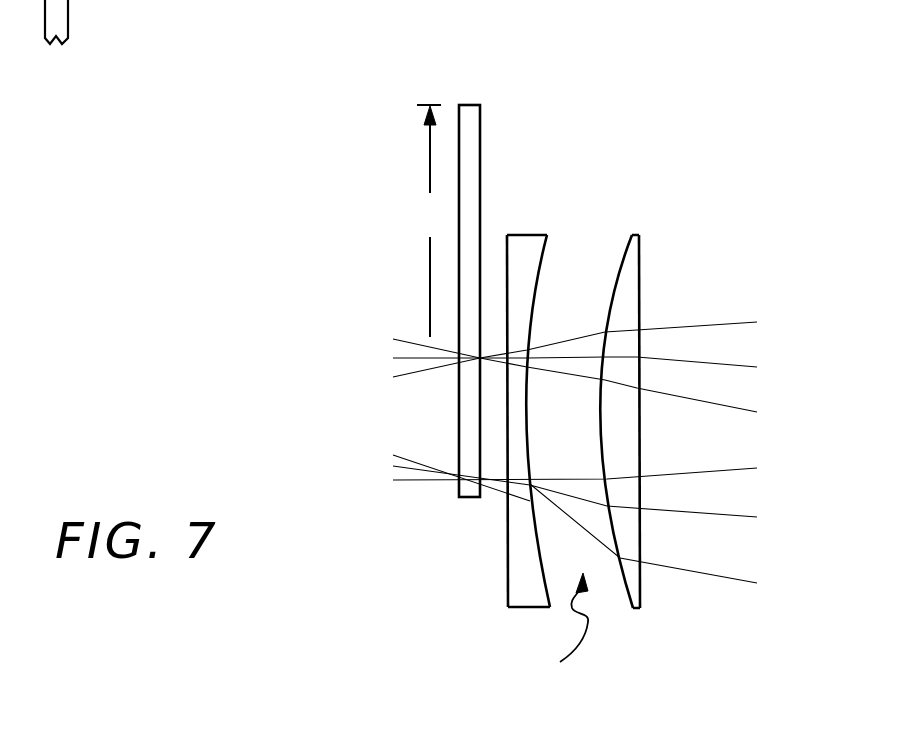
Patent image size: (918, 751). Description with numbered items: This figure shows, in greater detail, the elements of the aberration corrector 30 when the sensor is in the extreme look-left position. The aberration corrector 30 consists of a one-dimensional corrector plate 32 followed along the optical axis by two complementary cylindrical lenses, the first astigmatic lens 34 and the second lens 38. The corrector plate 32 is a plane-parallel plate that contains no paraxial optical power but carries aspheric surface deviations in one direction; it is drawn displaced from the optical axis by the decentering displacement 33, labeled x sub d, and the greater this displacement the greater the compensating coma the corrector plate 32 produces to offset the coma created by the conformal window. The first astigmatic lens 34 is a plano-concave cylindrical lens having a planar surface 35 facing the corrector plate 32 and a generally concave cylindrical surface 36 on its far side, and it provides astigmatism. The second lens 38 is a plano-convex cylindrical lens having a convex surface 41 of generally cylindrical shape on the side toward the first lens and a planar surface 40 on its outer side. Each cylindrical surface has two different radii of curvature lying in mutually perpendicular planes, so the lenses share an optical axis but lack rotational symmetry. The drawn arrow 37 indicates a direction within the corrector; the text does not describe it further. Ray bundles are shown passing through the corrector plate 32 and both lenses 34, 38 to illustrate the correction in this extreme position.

The aberration corrector 30 is at (363, 280).
The one-dimensional corrector plate 32 is at (464, 104).
The decentering displacement 33 is at (428, 190).
The first astigmatic lens 34 is at (521, 234).
The planar surface 35 is at (507, 568).
The generally concave cylindrical surface 36 is at (546, 263).
The direction arrow 37 is at (555, 625).
The second lens 38 is at (633, 236).
The planar surface 40 is at (640, 458).
The convex surface 41 is at (603, 437).